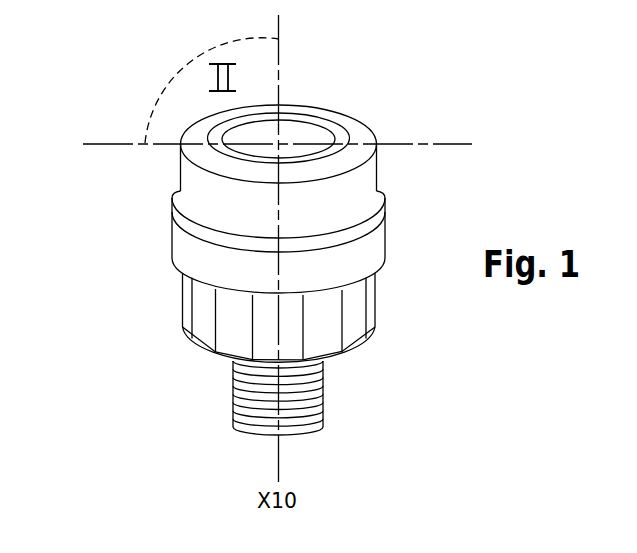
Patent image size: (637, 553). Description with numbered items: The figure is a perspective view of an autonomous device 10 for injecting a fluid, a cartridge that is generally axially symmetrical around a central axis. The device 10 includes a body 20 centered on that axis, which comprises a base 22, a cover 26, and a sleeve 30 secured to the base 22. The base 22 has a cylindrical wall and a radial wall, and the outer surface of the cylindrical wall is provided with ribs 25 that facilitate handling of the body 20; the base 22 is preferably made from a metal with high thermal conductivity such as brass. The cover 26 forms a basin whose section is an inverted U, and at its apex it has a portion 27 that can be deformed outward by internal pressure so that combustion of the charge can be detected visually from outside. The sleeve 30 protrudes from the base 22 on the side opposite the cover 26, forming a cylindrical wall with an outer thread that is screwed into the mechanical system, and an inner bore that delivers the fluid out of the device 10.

The autonomous device 10 is at (125, 68).
The body 20 is at (90, 230).
The base 22 is at (184, 295).
The ribs 25 is at (355, 305).
The cover 26 is at (180, 238).
The deformable portion 27 is at (298, 128).
The sleeve 30 is at (232, 388).